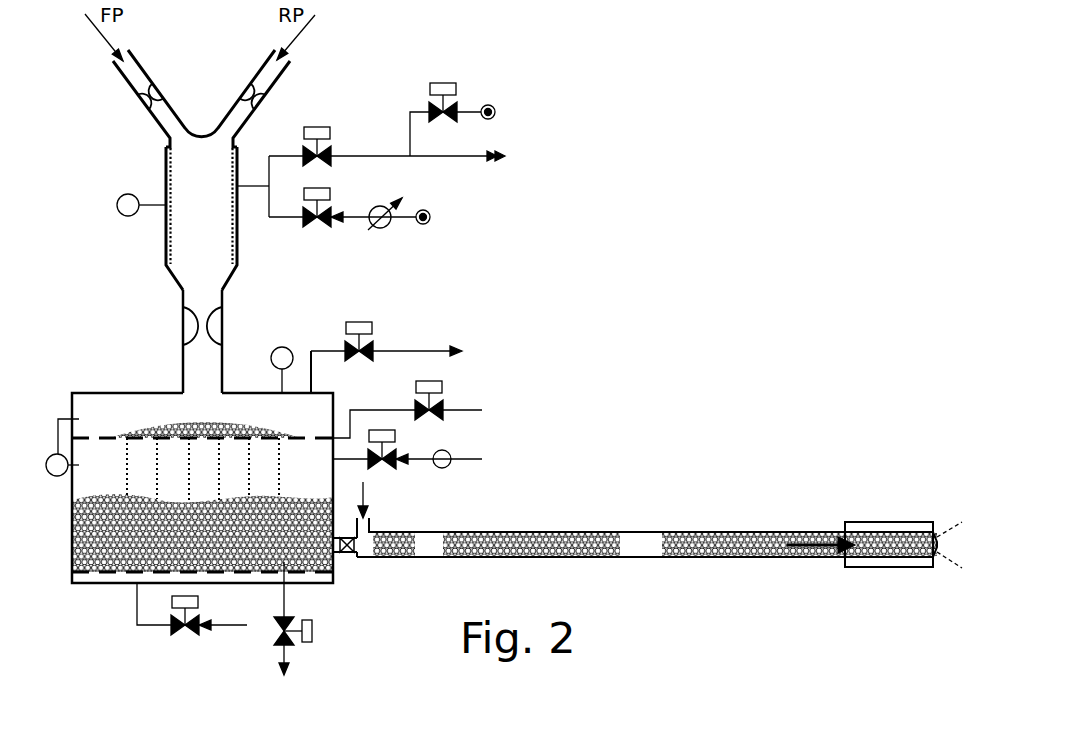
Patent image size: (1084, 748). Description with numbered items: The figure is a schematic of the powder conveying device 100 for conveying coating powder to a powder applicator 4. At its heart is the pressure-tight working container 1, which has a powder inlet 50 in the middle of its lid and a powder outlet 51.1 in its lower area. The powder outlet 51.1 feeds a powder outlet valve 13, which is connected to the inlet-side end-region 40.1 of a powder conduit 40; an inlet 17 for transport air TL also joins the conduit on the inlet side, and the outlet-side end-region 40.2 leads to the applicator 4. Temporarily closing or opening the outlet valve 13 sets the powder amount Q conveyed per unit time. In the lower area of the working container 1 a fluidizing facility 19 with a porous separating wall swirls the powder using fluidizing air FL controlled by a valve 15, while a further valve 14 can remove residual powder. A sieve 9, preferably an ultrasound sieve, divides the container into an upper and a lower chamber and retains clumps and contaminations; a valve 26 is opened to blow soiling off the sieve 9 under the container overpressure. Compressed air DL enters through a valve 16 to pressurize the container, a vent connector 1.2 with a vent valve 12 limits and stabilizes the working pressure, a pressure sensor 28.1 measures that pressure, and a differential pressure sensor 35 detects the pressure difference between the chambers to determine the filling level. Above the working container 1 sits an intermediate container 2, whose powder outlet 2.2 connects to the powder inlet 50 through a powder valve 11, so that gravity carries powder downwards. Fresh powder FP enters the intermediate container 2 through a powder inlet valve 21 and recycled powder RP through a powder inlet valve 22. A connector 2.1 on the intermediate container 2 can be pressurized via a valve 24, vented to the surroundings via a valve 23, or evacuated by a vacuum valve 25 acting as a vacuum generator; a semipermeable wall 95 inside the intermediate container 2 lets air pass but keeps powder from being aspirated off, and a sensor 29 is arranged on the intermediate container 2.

The powder conveying device 100 is at (130, 335).
The working container 1 is at (220, 495).
The vent connector 1.2 is at (308, 388).
The intermediate container 2 is at (177, 217).
The connector on the intermediate container 2.1 is at (242, 190).
The powder outlet of the intermediate container 2.2 is at (206, 306).
The powder applicator 4 is at (893, 522).
The sieve 9 is at (110, 436).
The powder valve 11 is at (183, 326).
The vent valve 12 is at (376, 342).
The powder outlet valve 13 is at (347, 555).
The valve 14 is at (313, 637).
The valve 15 is at (197, 635).
The valve 16 is at (393, 452).
The inlet for transport air 17 is at (367, 563).
The fluidizing facility 19 is at (115, 570).
The powder inlet valve 21 is at (158, 98).
The powder inlet valve 22 is at (246, 98).
The valve 23 is at (333, 143).
The valve 24 is at (328, 225).
The vacuum valve 25 is at (455, 108).
The valve 26 is at (445, 402).
The pressure sensor 28.1 is at (273, 350).
The sensor 29 is at (120, 211).
The differential pressure sensor 35 is at (58, 477).
The powder conduit 40 is at (690, 532).
The inlet-side end-region of the powder conduit 40.1 is at (390, 532).
The outlet-side end-region of the powder conduit 40.2 is at (835, 532).
The powder inlet 50 is at (196, 388).
The powder outlet 51.1 is at (327, 583).
The semipermeable wall 95 is at (166, 229).